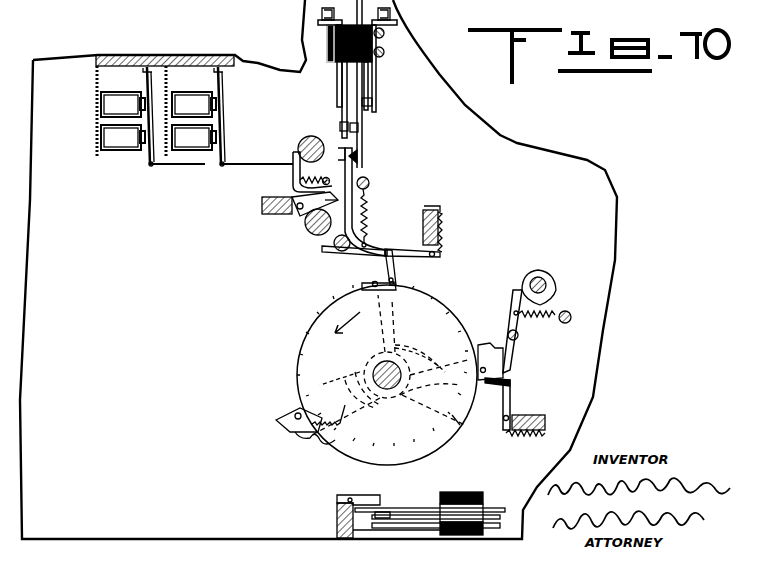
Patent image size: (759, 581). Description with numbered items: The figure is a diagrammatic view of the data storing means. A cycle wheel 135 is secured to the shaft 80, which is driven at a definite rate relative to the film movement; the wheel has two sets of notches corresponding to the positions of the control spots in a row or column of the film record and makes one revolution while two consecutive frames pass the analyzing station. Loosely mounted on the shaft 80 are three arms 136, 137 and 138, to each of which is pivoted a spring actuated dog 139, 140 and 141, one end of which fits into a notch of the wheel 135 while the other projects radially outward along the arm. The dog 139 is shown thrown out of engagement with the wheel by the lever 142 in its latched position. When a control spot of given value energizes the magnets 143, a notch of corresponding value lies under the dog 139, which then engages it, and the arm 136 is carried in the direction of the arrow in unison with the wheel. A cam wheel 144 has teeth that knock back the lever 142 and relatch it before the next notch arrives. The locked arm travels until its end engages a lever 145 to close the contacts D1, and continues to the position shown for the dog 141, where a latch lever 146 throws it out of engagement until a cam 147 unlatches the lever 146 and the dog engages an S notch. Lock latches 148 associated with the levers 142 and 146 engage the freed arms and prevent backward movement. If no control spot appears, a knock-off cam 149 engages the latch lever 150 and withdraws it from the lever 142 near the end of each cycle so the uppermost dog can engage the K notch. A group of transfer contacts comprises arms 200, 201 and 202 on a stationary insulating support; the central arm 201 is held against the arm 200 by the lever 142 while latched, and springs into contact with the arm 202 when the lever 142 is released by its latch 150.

The magnets 143 is at (128, 148).
The transfer contact arm 200 is at (372, 78).
The central transfer contact arm 201 is at (360, 127).
The transfer contact arm 202 is at (340, 106).
The knock-off cam 149 is at (312, 138).
The latch lever 150 is at (297, 177).
The cam wheel 144 is at (300, 224).
The lever 142 is at (348, 203).
The spring actuated dog 139 is at (388, 270).
The lock latches 148 is at (412, 254).
The cam 147 is at (542, 272).
The latch lever 146 is at (520, 328).
The spring actuated dog 141 is at (495, 352).
The cycle wheel 135 is at (322, 330).
The shaft 80 is at (385, 398).
The arm 136 is at (420, 358).
The arm 137 is at (339, 367).
The spring actuated dog 140 is at (298, 432).
The arm 138 is at (455, 418).
The lever 145 is at (357, 506).
The contacts D1 is at (390, 510).